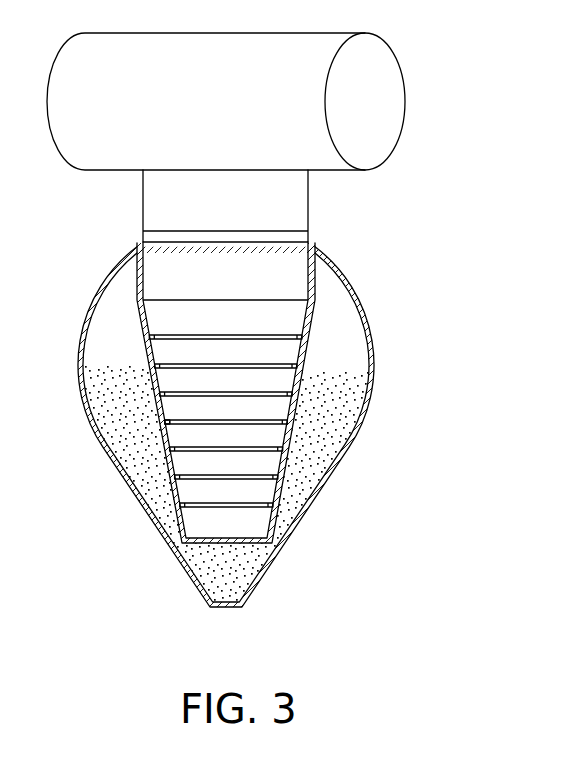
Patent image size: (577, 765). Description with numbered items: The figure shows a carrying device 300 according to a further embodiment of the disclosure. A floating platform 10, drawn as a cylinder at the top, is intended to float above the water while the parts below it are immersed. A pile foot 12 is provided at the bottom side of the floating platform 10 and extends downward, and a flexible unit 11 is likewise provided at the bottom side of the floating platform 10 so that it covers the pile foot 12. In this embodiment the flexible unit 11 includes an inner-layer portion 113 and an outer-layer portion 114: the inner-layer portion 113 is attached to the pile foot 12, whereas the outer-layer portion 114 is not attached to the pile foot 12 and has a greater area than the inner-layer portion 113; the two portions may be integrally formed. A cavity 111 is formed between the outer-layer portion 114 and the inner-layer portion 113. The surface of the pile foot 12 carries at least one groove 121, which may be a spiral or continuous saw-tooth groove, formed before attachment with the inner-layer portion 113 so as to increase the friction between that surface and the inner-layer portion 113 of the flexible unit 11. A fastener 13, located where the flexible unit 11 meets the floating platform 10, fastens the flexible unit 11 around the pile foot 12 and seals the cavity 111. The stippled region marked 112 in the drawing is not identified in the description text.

The floating platform 10 is at (377, 150).
The fastener 13 is at (143, 241).
The flexible unit 11 is at (455, 282).
The inner-layer portion 113 is at (310, 317).
The outer-layer portion 114 is at (373, 332).
The cavity 111 is at (108, 326).
The filter material 112 is at (98, 386).
The pile foot 12 is at (287, 383).
The groove 121 is at (165, 420).
The carrying device 300 is at (495, 185).